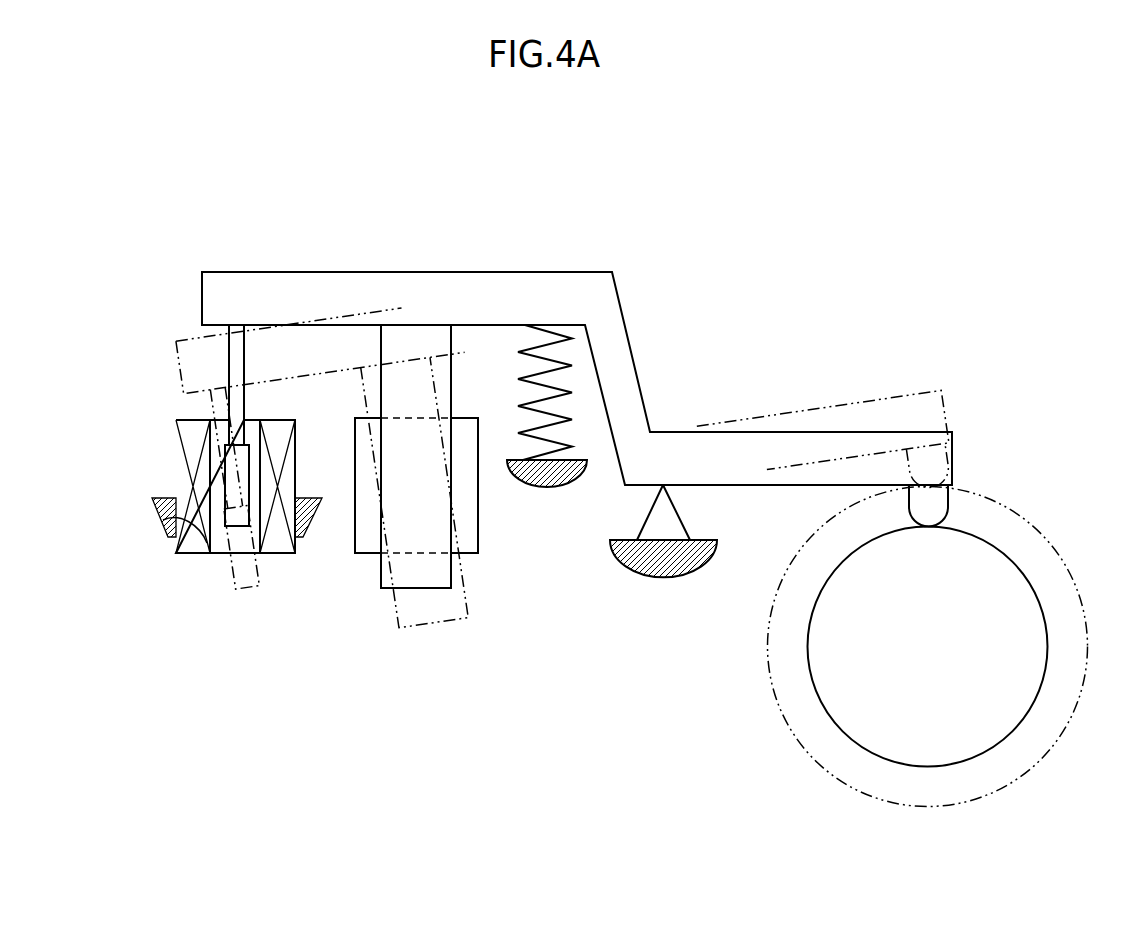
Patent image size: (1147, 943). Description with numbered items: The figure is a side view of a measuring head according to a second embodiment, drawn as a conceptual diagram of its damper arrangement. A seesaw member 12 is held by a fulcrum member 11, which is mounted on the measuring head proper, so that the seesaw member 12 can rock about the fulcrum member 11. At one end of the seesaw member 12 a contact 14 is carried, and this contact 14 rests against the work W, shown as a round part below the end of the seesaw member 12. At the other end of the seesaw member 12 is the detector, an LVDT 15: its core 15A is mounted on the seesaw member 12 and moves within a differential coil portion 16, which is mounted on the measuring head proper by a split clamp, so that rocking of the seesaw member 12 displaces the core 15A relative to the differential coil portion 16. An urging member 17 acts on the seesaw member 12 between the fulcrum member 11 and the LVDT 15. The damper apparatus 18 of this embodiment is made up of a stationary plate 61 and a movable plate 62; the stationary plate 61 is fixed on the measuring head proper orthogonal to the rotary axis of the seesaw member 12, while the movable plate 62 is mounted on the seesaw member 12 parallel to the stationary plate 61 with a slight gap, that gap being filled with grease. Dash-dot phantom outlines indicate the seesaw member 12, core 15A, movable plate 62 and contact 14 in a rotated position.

The fulcrum member 11 is at (675, 522).
The seesaw member 12 is at (582, 278).
The contact 14 is at (940, 500).
The LVDT 15 is at (167, 435).
The core 15A is at (233, 490).
The differential coil portion 16 is at (192, 540).
The urging member 17 is at (558, 390).
The damper apparatus 18 is at (417, 545).
The stationary plate 61 is at (470, 543).
The movable plate 62 is at (352, 617).
The work W is at (1030, 653).